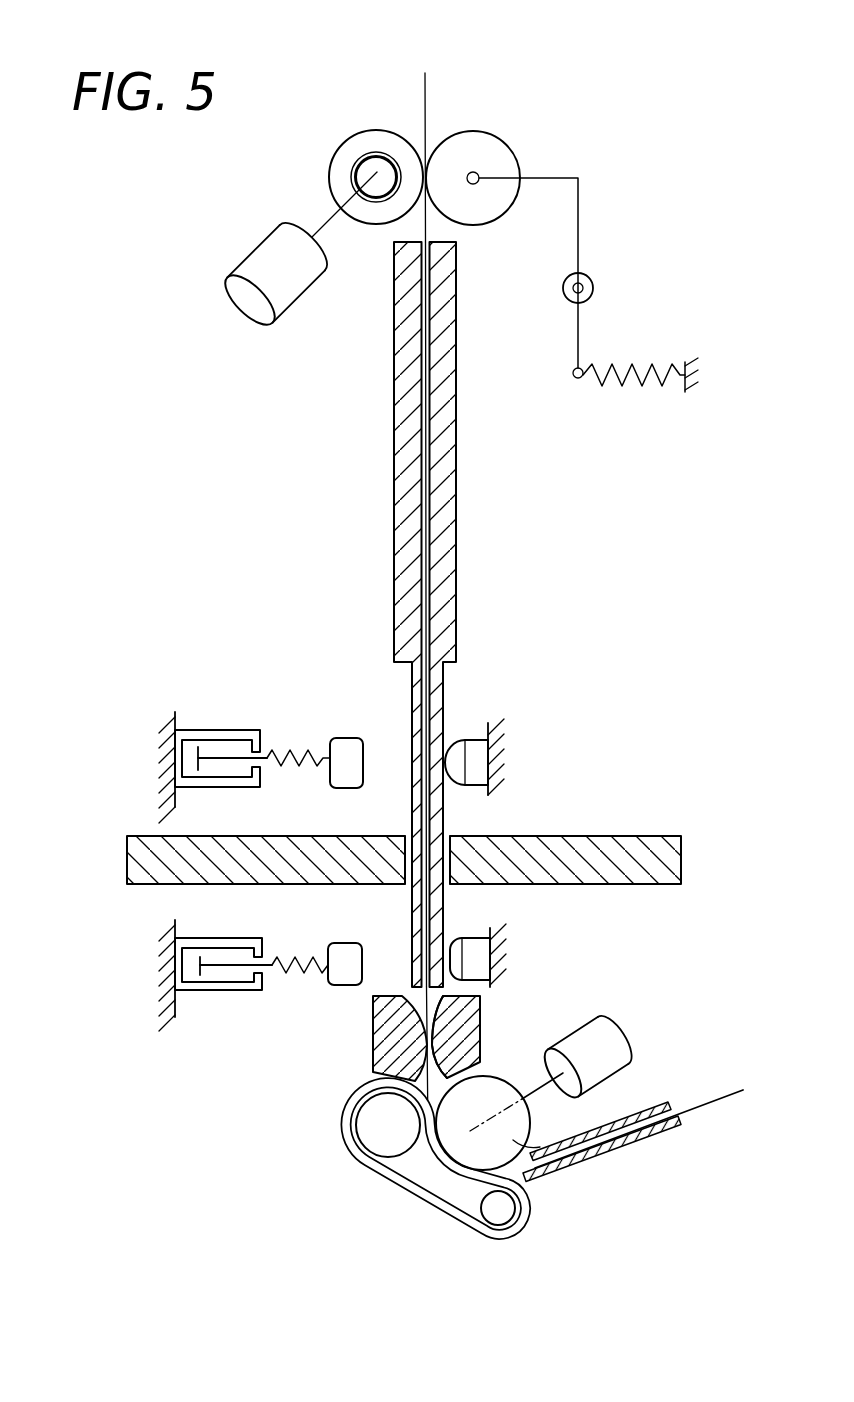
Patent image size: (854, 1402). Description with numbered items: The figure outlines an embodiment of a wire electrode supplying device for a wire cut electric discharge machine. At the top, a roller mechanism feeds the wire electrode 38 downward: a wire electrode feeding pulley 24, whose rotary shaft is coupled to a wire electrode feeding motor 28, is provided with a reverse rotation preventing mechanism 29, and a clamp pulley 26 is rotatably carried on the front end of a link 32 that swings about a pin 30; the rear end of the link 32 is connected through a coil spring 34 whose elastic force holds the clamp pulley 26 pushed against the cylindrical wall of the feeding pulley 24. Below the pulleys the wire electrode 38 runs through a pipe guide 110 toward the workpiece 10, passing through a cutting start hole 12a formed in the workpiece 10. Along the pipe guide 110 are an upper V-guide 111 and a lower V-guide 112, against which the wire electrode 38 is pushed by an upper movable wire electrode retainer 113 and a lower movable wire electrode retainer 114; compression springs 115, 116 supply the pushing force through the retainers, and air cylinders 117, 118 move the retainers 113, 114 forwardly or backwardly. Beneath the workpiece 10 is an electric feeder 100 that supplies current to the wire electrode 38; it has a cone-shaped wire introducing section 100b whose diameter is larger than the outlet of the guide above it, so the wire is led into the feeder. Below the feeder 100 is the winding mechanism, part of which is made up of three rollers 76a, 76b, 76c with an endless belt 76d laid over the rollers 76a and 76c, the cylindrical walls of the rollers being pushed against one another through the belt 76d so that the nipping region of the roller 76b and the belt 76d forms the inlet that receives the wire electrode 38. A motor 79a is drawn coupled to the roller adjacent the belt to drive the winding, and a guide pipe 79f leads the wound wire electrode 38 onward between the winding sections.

The workpiece 10 is at (682, 853).
The cutting start hole 12a is at (447, 834).
The wire electrode feeding pulley 24 is at (345, 142).
The clamp pulley 26 is at (498, 133).
The wire electrode feeding motor 28 is at (258, 247).
The reverse rotation preventing mechanism 29 is at (378, 152).
The pin 30 is at (592, 280).
The link 32 is at (580, 180).
The coil spring 34 is at (635, 372).
The wire electrode 38 is at (730, 1088).
The roller 76a is at (357, 1160).
The roller 76b is at (548, 1155).
The roller 76c is at (492, 1215).
The endless belt 76d is at (403, 1193).
The drive motor 79a is at (623, 1030).
The guide pipe 79f is at (652, 1145).
The electric feeder 100 is at (481, 1045).
The wire introducing section 100b is at (445, 1014).
The pipe guide 110 is at (457, 493).
The upper V-guide 111 is at (470, 740).
The lower V-guide 112 is at (463, 938).
The upper movable wire electrode retainer 113 is at (348, 738).
The lower movable wire electrode retainer 114 is at (342, 985).
The compression spring 115 is at (293, 752).
The compression spring 116 is at (298, 972).
The air cylinder 117 is at (213, 728).
The air cylinder 118 is at (207, 990).